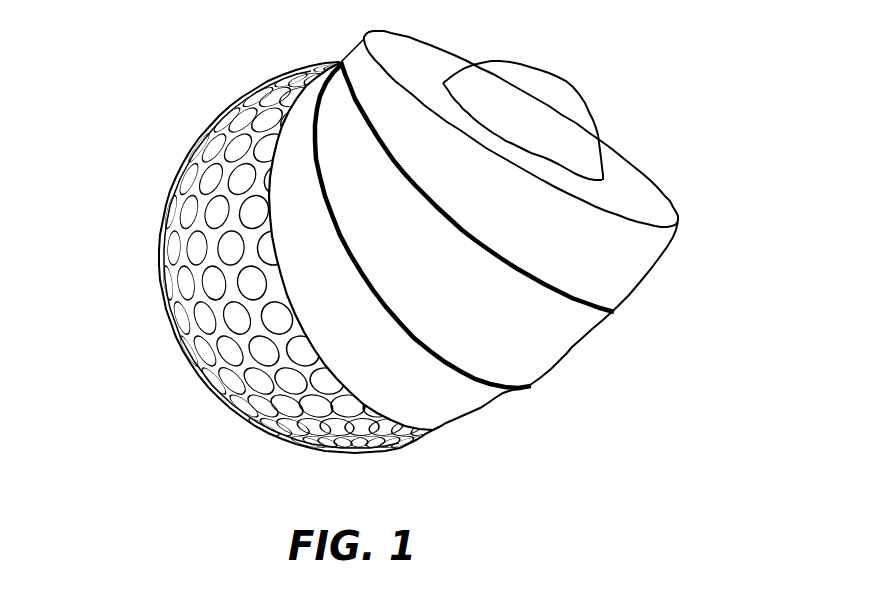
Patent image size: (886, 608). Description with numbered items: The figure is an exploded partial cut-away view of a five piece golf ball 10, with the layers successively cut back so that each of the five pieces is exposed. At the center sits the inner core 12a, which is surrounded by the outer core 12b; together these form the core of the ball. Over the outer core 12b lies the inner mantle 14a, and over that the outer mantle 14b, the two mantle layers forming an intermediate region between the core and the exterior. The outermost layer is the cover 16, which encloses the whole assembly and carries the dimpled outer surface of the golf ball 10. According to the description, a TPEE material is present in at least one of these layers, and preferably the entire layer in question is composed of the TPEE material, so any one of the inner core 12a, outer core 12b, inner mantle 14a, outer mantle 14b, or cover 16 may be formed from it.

The golf ball 10 is at (170, 116).
The inner core 12a is at (612, 104).
The outer core 12b is at (664, 285).
The inner mantle 14a is at (595, 371).
The outer mantle 14b is at (506, 425).
The cover 16 is at (178, 384).